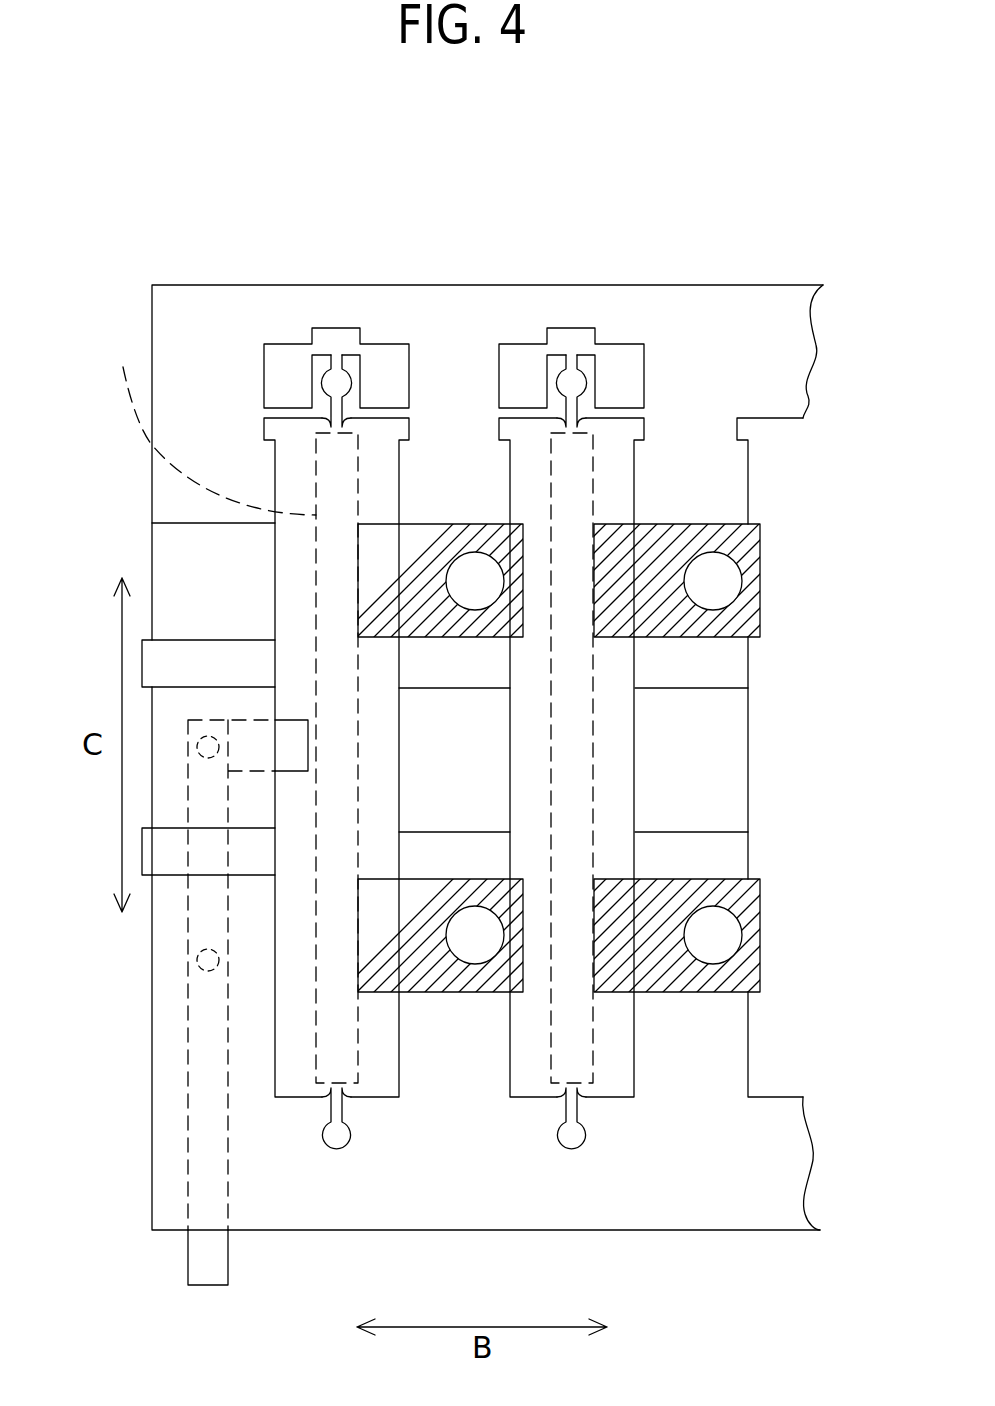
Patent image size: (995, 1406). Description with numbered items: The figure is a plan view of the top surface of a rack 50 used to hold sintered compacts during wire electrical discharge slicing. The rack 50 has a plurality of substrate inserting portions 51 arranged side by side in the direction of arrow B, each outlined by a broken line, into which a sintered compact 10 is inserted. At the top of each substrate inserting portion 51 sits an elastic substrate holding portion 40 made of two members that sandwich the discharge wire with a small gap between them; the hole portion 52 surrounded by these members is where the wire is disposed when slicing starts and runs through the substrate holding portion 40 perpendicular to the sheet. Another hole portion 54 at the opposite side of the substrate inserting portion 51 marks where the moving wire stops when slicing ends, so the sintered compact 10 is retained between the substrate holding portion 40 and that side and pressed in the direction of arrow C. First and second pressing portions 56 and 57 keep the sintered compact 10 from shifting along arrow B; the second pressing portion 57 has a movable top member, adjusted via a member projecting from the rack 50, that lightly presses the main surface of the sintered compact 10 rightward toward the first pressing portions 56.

The sintered compact 10 is at (205, 421).
The substrate holding portion 40 is at (315, 386).
The rack 50 is at (466, 726).
The substrate inserting portion 51 is at (397, 747).
The hole portion 52 is at (368, 384).
The hole portion 54 is at (349, 1144).
The first pressing portion 56 is at (760, 576).
The second pressing portion 57 is at (188, 978).